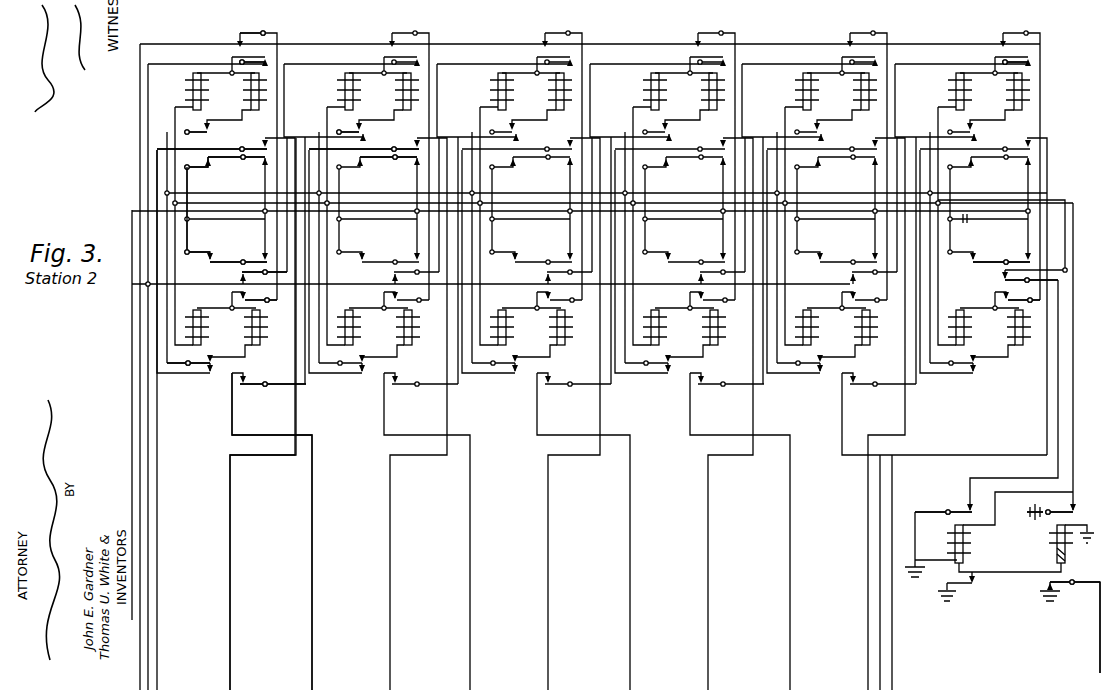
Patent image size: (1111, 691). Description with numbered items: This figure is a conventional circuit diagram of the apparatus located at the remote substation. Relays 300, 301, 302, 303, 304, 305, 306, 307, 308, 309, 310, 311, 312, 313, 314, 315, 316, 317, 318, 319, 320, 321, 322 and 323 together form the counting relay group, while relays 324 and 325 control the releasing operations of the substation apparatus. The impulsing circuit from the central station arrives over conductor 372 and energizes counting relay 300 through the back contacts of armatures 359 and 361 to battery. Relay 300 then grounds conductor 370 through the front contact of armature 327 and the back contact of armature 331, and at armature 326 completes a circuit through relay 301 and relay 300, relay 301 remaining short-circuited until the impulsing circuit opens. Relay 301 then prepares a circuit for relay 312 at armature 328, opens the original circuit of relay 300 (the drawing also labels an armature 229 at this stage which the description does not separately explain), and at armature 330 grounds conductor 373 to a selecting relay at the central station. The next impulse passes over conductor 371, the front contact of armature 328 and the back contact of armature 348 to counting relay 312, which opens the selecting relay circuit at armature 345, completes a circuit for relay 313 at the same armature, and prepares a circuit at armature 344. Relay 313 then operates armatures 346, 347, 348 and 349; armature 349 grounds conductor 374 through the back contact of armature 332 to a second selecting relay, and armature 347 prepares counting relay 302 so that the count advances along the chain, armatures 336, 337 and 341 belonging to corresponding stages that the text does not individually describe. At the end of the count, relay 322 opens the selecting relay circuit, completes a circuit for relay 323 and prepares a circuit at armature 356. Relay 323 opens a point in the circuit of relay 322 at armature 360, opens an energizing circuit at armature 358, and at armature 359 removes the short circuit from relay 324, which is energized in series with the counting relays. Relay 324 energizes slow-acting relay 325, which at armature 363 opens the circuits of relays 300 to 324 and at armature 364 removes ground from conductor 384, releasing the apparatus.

The contact 229 is at (230, 58).
The counting relay 300 is at (184, 91).
The relay 301 is at (243, 91).
The counting relay 302 is at (336, 91).
The counting relay 303 is at (395, 91).
The counting relay 304 is at (489, 91).
The counting relay 305 is at (548, 91).
The counting relay 306 is at (642, 91).
The counting relay 307 is at (701, 91).
The counting relay 308 is at (794, 91).
The counting relay 309 is at (853, 91).
The counting relay 310 is at (947, 91).
The counting relay 311 is at (1006, 91).
The counting relay 312 is at (212, 327).
The relay 313 is at (265, 336).
The counting relay 314 is at (364, 327).
The counting relay 315 is at (417, 336).
The counting relay 316 is at (517, 327).
The counting relay 317 is at (570, 336).
The counting relay 318 is at (670, 327).
The counting relay 319 is at (723, 336).
The counting relay 320 is at (822, 327).
The counting relay 321 is at (875, 336).
The counting relay 322 is at (975, 327).
The relay 323 is at (1028, 336).
The releasing relay 324 is at (979, 544).
The slow-acting relay 325 is at (1046, 544).
The armature 326 is at (204, 141).
The armature 327 is at (202, 174).
The armature 328 is at (256, 23).
The armature 330 is at (212, 137).
The armature 331 is at (237, 168).
The armature 332 is at (329, 125).
The contact 336 is at (364, 137).
The contact 337 is at (388, 168).
The contact 341 is at (995, 56).
The armature 344 is at (204, 210).
The armature 345 is at (188, 376).
The armature 346 is at (238, 247).
The armature 347 is at (254, 272).
The armature 348 is at (273, 305).
The armature 349 is at (273, 375).
The armature 356 is at (967, 231).
The armature 358 is at (1001, 248).
The armature 359 is at (1007, 279).
The armature 360 is at (997, 300).
The armature 361 is at (943, 500).
The armature 363 is at (1039, 504).
The armature 364 is at (1065, 600).
The conductor 370 is at (141, 620).
The conductor 371 is at (149, 640).
The conductor 372 is at (158, 658).
The conductor 373 is at (232, 644).
The conductor 374 is at (314, 644).
The conductor 384 is at (1076, 627).